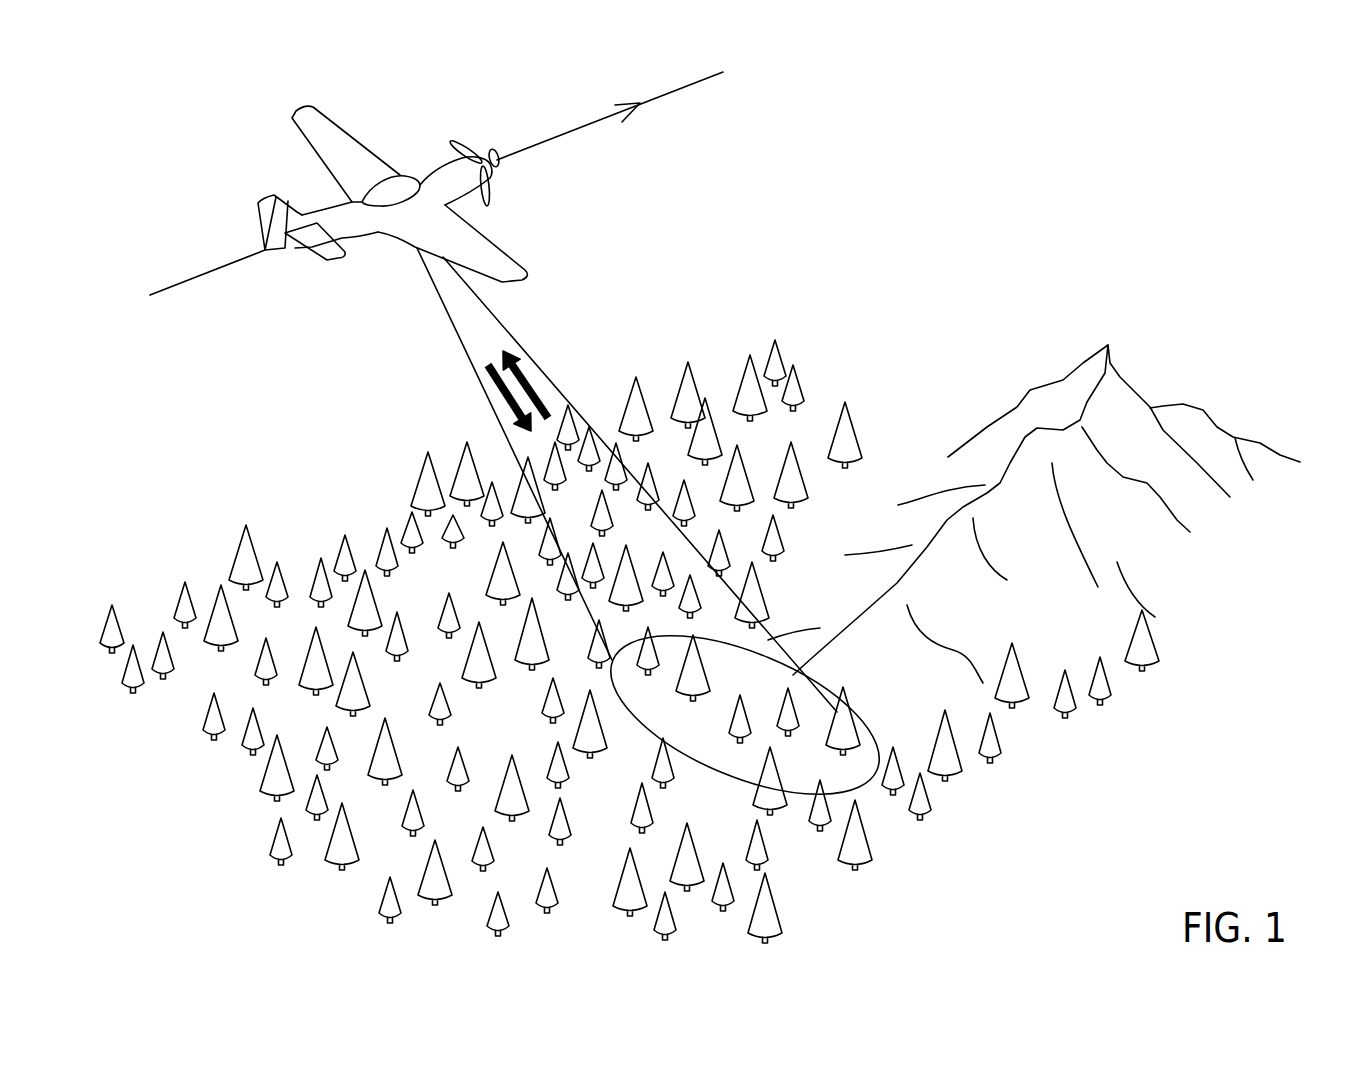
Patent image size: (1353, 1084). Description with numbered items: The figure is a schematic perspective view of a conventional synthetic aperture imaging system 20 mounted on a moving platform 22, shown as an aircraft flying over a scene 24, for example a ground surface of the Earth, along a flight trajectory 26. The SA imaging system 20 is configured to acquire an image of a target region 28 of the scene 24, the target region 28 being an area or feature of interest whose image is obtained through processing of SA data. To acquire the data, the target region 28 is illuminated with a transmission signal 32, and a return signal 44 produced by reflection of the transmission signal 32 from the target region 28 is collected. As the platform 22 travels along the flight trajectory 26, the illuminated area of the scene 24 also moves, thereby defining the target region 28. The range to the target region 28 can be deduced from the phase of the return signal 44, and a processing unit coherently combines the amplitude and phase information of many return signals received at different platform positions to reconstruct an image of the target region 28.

The SA imaging system 20 is at (416, 218).
The moving platform 22 is at (500, 270).
The scene 24 is at (898, 837).
The flight trajectory 26 is at (590, 122).
The target region 28 is at (810, 720).
The transmission signal 32 is at (507, 390).
The return signal 44 is at (532, 383).